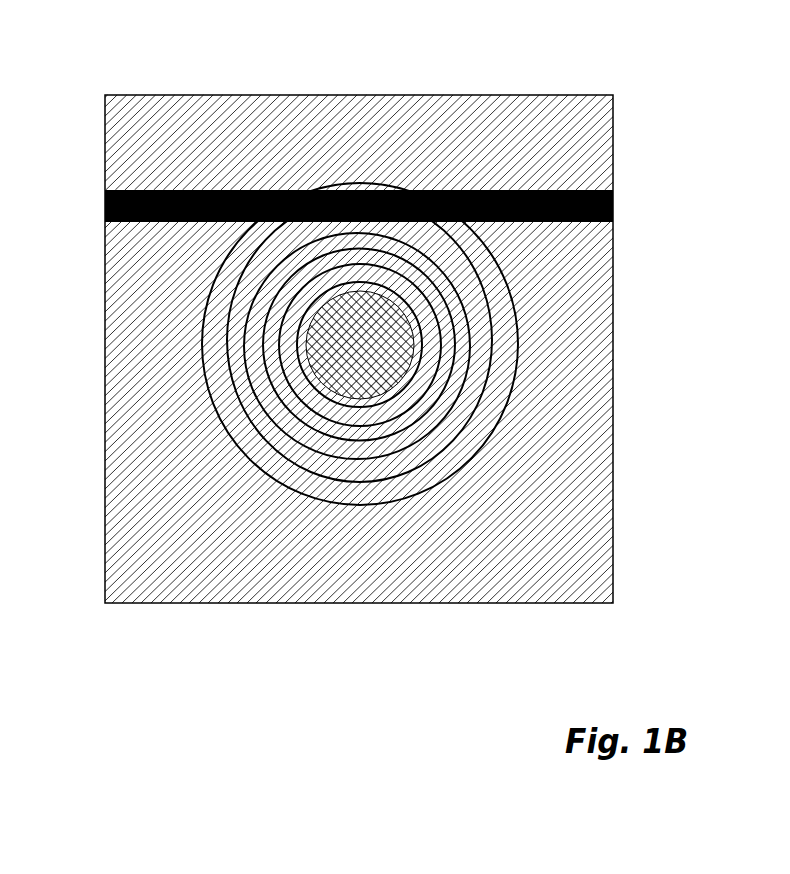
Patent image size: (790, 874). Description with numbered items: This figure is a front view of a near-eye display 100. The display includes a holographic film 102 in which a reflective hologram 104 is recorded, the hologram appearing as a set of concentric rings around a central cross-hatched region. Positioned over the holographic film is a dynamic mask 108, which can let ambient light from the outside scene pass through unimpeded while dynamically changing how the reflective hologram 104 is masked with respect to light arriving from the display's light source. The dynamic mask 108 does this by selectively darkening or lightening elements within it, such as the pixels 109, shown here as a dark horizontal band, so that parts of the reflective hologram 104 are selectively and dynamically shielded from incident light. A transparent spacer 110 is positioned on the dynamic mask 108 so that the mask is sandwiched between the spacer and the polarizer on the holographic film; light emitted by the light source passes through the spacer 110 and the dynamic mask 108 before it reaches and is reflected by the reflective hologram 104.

The near-eye display 100 is at (352, 334).
The holographic film 102 is at (360, 345).
The reflective hologram 104 is at (481, 462).
The dynamic mask 108 is at (324, 103).
The pixels 109 is at (613, 209).
The transparent spacer 110 is at (112, 293).